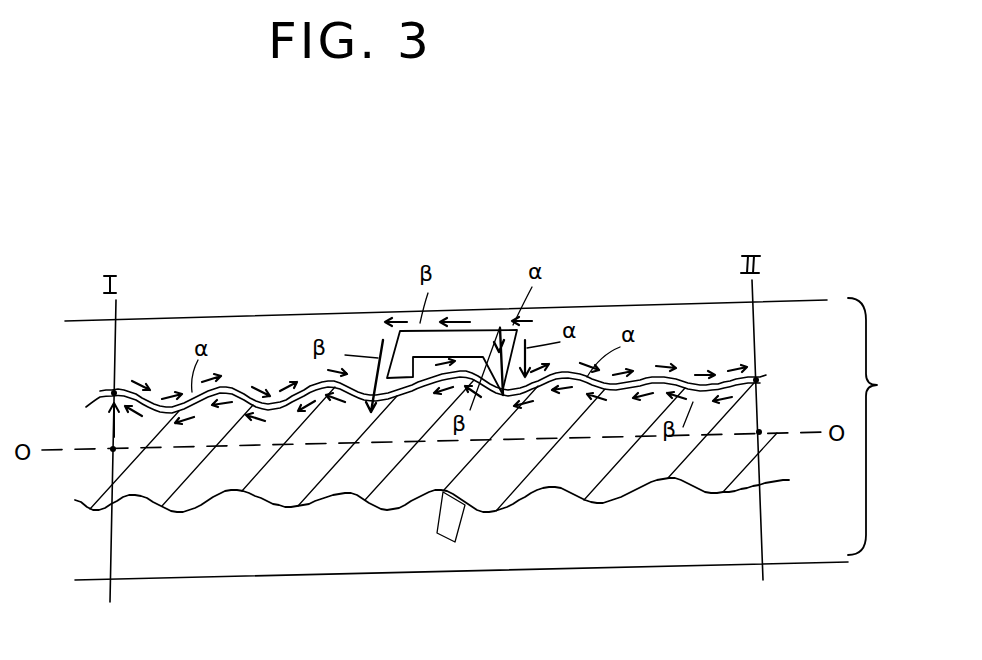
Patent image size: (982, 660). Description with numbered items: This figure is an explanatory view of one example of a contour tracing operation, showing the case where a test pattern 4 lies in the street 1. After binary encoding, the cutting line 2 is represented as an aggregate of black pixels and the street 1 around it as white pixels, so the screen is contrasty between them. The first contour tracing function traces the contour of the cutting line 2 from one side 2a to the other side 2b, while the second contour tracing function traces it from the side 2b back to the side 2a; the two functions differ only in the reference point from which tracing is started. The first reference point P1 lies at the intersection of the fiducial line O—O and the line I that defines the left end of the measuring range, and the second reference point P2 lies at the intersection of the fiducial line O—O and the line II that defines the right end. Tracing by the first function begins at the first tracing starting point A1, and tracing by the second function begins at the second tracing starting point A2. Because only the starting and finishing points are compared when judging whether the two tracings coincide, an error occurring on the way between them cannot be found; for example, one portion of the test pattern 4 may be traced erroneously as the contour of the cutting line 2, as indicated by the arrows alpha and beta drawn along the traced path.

The street 1 is at (479, 439).
The cutting line 2 is at (197, 497).
The one side of the cutting line 2a is at (92, 412).
The other side of the cutting line 2b is at (778, 460).
The test pattern 4 is at (440, 337).
The first tracing starting point A1 is at (114, 393).
The second tracing starting point A2 is at (756, 380).
The first reference point P1 is at (113, 450).
The second reference point P2 is at (759, 432).